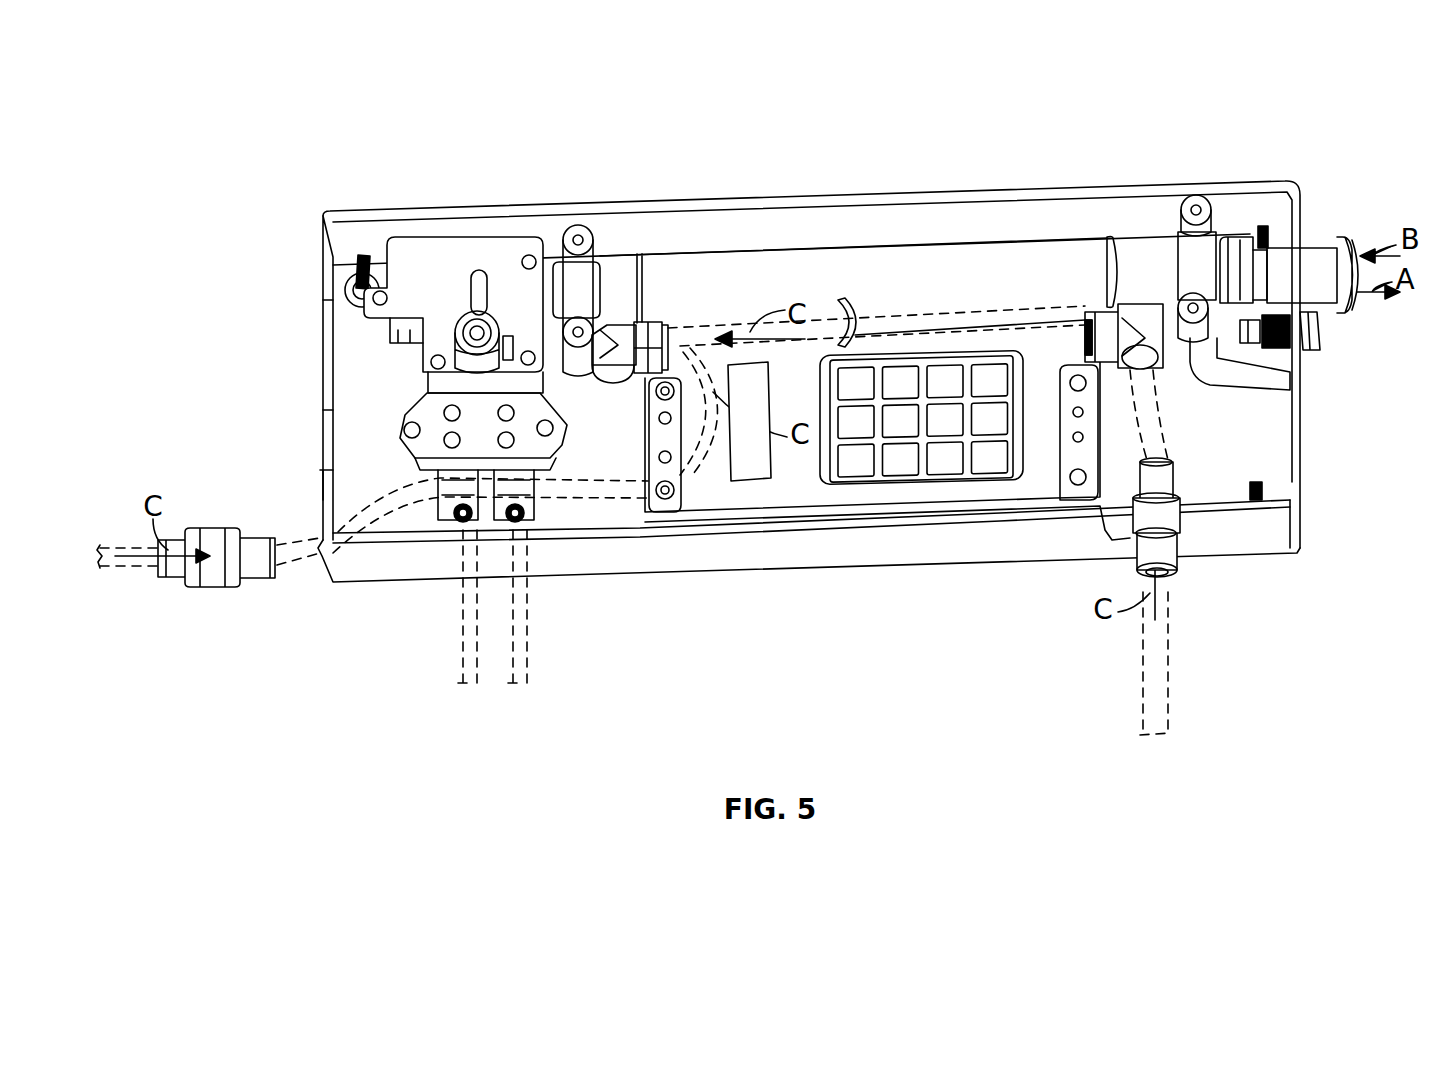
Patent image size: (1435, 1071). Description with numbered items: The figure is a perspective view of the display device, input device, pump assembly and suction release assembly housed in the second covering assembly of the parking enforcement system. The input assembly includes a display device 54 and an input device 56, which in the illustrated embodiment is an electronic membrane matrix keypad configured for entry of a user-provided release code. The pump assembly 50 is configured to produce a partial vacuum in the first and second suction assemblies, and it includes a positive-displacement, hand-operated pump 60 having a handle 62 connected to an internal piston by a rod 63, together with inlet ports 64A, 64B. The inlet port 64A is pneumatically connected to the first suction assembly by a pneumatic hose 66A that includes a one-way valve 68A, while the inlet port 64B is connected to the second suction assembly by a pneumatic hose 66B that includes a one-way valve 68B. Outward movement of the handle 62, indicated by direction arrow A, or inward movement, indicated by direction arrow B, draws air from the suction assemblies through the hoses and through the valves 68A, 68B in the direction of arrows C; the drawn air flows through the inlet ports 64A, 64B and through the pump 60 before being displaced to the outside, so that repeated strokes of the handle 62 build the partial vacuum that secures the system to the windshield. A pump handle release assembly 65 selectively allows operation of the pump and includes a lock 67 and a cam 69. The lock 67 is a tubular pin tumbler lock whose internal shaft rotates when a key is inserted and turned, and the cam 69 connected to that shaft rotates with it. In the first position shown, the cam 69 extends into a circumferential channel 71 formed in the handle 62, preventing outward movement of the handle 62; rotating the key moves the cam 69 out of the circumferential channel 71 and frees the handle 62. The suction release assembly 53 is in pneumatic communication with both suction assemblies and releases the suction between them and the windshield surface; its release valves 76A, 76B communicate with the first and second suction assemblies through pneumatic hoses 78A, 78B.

The pump assembly 50 is at (1025, 241).
The suction release assembly 53 is at (431, 238).
The display device 54 is at (747, 483).
The input device 56 is at (917, 485).
The pump 60 is at (848, 268).
The handle 62 is at (1322, 248).
The rod 63 is at (1228, 272).
The inlet port 64A is at (645, 388).
The inlet port 64B is at (650, 323).
The pump handle release assembly 65 is at (1310, 347).
The pneumatic hose 66A is at (298, 540).
The pneumatic hose 66B is at (1170, 440).
The lock 67 is at (1320, 334).
The one-way valve 68A is at (208, 582).
The one-way valve 68B is at (1187, 530).
The cam 69 is at (1250, 311).
The circumferential channel 71 is at (1262, 282).
The release valve 76A is at (463, 527).
The release valve 76B is at (528, 520).
The pneumatic hose 78A is at (457, 618).
The pneumatic hose 78B is at (533, 620).